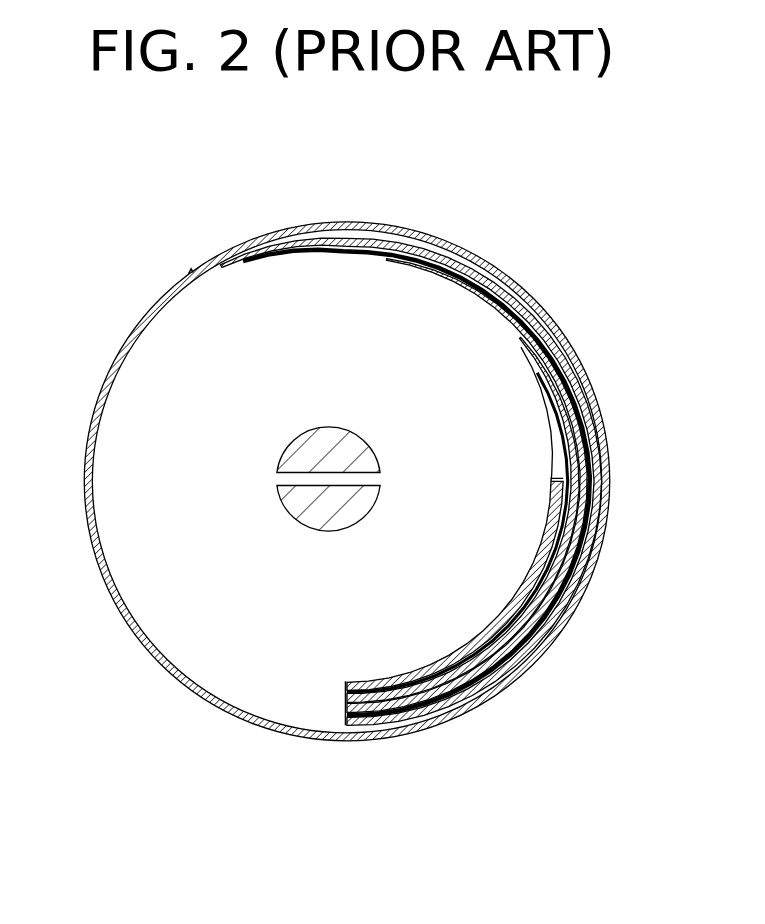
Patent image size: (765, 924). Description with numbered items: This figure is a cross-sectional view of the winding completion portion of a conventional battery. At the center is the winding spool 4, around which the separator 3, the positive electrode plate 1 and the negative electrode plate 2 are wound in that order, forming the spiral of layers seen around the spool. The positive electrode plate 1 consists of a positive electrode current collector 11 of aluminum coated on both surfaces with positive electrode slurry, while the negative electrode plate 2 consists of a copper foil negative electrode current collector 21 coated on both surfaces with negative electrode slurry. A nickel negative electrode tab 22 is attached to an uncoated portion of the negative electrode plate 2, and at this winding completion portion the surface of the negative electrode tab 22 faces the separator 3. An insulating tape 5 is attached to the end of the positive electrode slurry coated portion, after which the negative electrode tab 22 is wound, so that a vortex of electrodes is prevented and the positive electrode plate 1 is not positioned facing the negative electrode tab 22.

The positive electrode plate 1 is at (491, 486).
The positive electrode current collector 11 is at (463, 531).
The negative electrode plate 2 is at (429, 481).
The negative electrode current collector 21 is at (424, 483).
The negative electrode tab 22 is at (410, 481).
The separator 3 is at (456, 558).
The winding spool 4 is at (338, 445).
The insulating tape 5 is at (346, 453).